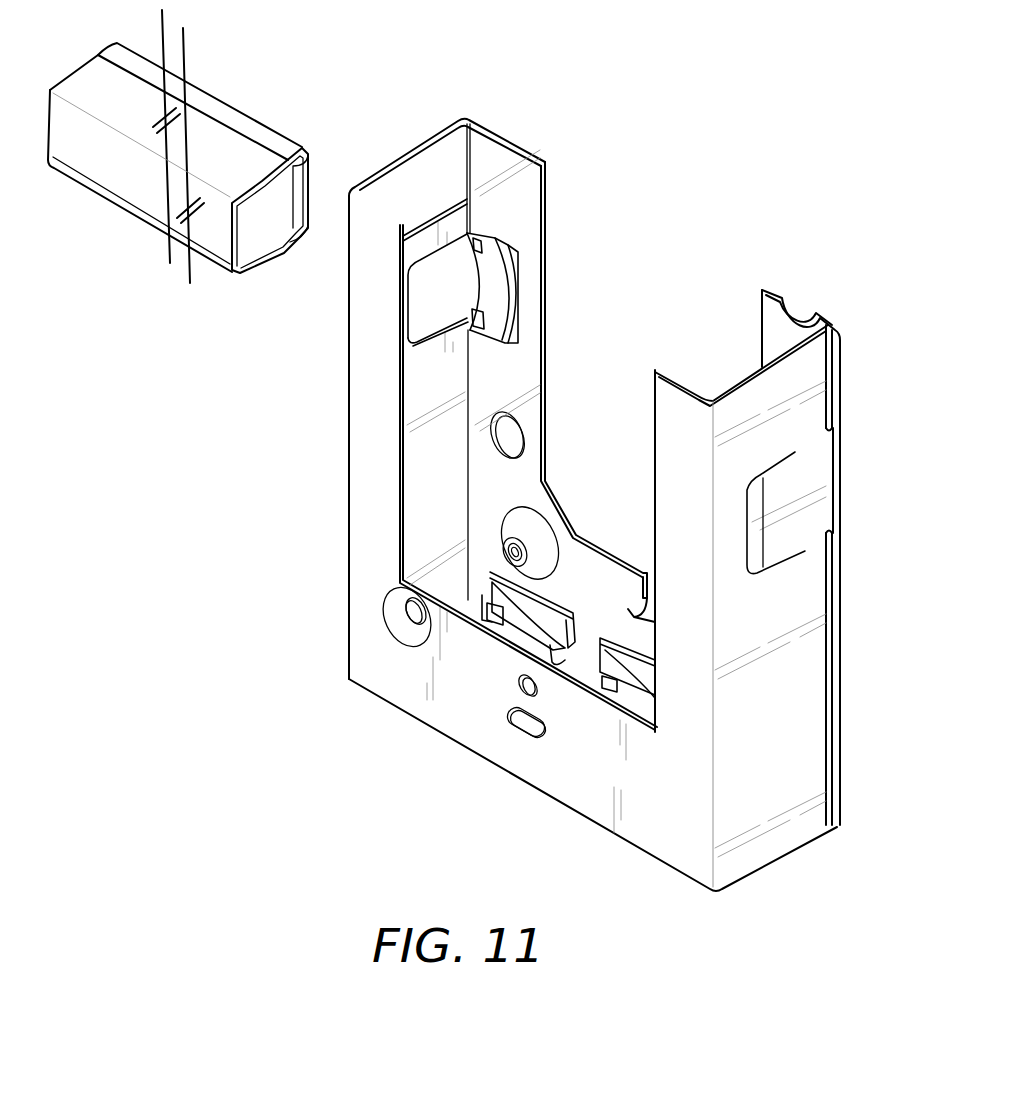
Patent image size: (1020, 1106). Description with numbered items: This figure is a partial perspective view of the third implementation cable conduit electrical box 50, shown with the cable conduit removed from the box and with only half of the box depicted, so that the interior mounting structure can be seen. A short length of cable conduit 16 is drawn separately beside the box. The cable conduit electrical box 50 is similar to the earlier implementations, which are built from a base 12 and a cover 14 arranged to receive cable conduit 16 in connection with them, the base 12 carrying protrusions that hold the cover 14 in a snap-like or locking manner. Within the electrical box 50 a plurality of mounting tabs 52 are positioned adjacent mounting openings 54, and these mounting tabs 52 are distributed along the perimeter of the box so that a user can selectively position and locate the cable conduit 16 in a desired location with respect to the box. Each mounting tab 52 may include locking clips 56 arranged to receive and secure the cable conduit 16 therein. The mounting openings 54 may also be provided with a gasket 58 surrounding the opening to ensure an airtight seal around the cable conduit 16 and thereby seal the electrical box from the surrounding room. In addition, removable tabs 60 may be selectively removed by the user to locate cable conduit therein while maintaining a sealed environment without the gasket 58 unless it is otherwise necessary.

The base 12 is at (515, 140).
The cover 14 is at (348, 376).
The cable conduit 16 is at (220, 100).
The cable conduit electrical box 50 is at (678, 173).
The mounting tabs 52 is at (505, 293).
The mounting openings 54 is at (432, 310).
The locking clips 56 is at (470, 233).
The gasket 58 is at (422, 202).
The removable tabs 60 is at (806, 472).